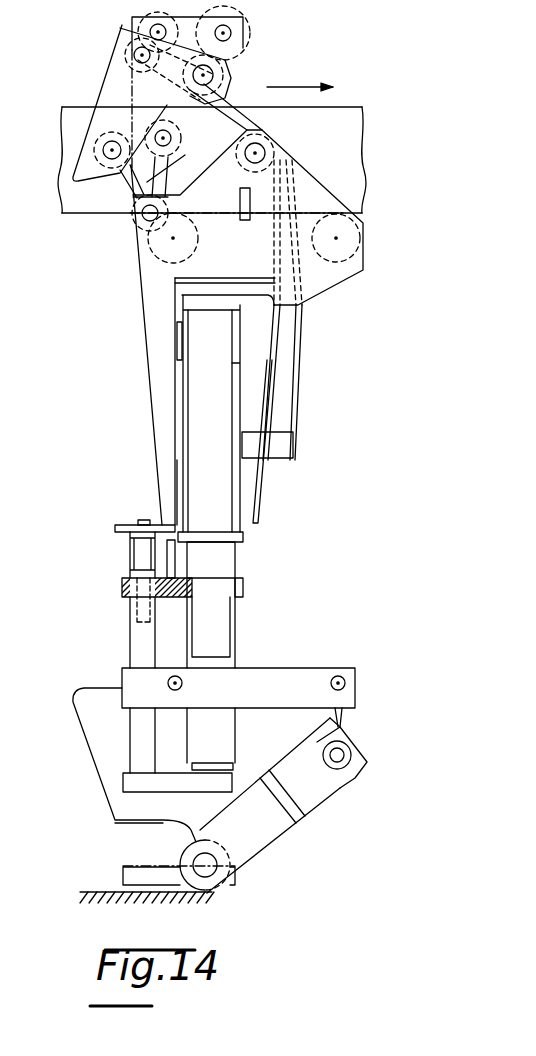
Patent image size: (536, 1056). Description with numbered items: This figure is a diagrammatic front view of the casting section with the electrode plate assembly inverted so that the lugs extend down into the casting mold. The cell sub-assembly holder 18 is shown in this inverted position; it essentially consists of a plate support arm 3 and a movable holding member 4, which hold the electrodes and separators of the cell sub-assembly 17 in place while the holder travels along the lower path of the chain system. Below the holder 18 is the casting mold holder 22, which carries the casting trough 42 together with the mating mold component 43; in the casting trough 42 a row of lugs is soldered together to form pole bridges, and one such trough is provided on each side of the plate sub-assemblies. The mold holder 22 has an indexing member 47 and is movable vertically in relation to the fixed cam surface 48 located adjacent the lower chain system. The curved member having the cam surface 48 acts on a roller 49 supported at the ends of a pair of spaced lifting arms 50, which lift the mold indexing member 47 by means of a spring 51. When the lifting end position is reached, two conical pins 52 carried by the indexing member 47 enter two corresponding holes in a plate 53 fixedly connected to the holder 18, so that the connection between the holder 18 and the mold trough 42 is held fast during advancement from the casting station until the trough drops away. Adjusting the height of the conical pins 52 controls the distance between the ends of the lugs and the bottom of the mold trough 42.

The plate support arm 3 is at (160, 408).
The movable holding member 4 is at (298, 415).
The cell sub-assembly 17 is at (223, 492).
The cell sub-assembly holder 18 is at (165, 305).
The casting mold holder 22 is at (280, 668).
The casting trough 42 is at (235, 545).
The mating mold component 43 is at (235, 565).
The indexing member 47 is at (117, 590).
The cam surface 48 is at (95, 892).
The roller 49 is at (227, 892).
The lifting arms 50 is at (258, 840).
The spring 51 is at (90, 738).
The conical pins 52 is at (128, 555).
The plate 53 is at (117, 528).